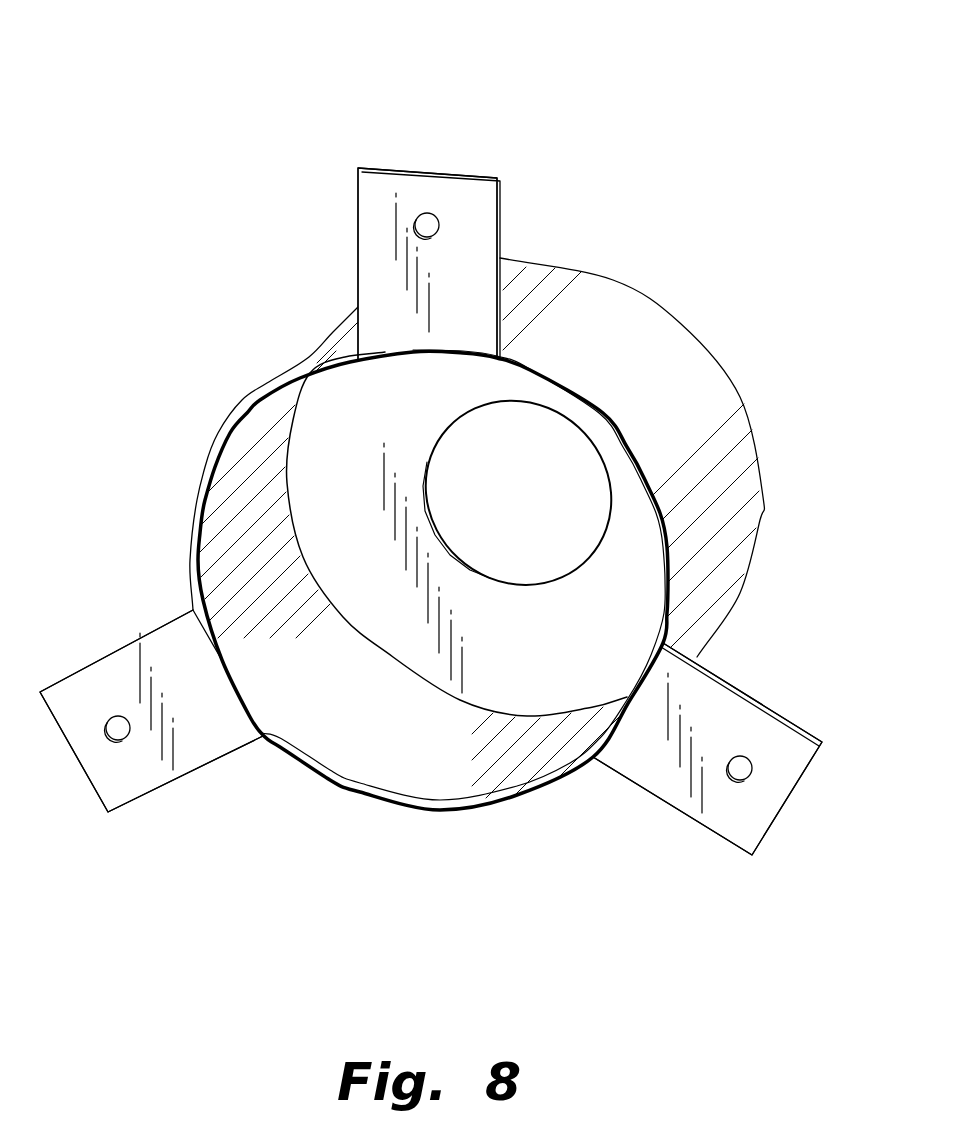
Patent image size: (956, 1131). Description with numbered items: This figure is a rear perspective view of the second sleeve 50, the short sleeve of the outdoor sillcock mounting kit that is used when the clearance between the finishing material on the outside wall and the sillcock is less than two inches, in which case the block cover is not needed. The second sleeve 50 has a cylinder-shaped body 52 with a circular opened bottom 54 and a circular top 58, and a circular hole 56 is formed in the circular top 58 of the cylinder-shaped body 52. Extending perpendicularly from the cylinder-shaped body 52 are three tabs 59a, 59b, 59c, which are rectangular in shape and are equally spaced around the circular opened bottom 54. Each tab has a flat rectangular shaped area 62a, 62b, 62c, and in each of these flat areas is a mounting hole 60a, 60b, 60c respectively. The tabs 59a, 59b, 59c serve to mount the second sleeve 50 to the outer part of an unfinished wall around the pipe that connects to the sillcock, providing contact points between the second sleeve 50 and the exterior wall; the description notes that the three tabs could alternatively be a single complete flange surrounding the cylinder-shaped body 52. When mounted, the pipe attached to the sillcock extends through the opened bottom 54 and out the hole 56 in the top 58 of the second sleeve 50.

The second sleeve 50 is at (158, 78).
The cylinder-shaped body 52 is at (660, 372).
The circular opened bottom 54 is at (357, 818).
The circular hole 56 is at (447, 428).
The circular top 58 is at (556, 688).
The tab 59a is at (716, 747).
The tab 59b is at (428, 215).
The tab 59c is at (145, 691).
The mounting hole 60a is at (748, 780).
The mounting hole 60b is at (442, 228).
The mounting hole 60c is at (110, 742).
The flat rectangular shaped area 62a is at (674, 786).
The flat rectangular shaped area 62b is at (370, 230).
The flat rectangular shaped area 62c is at (195, 755).